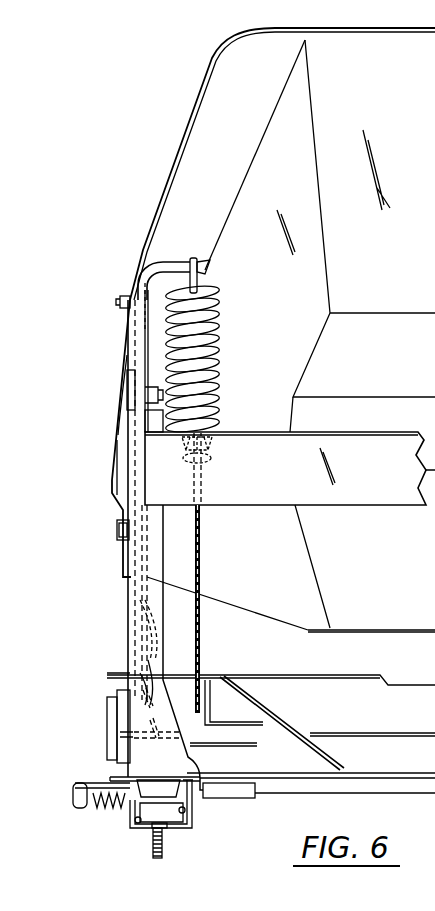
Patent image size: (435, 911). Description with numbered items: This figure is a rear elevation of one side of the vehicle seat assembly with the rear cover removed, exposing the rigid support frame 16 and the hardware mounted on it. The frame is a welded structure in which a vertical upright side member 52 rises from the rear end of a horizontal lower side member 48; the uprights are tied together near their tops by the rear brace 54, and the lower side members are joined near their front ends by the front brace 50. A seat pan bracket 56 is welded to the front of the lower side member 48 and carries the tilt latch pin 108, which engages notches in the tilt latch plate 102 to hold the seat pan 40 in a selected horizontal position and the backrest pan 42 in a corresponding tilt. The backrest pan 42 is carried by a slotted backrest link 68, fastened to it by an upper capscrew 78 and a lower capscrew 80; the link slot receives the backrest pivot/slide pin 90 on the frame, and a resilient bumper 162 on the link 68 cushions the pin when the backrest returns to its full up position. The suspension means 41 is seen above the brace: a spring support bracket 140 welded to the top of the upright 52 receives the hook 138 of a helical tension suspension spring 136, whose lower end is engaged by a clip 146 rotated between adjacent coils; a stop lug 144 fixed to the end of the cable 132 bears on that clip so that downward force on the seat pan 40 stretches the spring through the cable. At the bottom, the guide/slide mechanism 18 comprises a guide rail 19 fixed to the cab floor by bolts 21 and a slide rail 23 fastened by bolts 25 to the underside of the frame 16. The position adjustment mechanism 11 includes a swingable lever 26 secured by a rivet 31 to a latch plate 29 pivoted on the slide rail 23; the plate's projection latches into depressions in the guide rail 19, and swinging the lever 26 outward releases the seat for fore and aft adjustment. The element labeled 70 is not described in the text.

The position adjustment mechanism 11 is at (58, 790).
The support frame 16 is at (112, 765).
The guide/slide mechanism 18 is at (142, 831).
The guide rail 19 is at (192, 822).
The bolt 21 is at (165, 855).
The slide rail 23 is at (132, 817).
The bolt 25 is at (172, 832).
The swingable lever 26 is at (75, 805).
The latch plate 29 is at (100, 780).
The rivet 31 is at (85, 780).
The seat pan 40 is at (327, 675).
The suspension means 41 is at (216, 292).
The backrest pan 42 is at (192, 116).
The lower side member 48 is at (250, 798).
The front brace 50 is at (343, 795).
The upright side member 52 is at (128, 479).
The rear brace 54 is at (353, 495).
The seat pan bracket 56 is at (108, 730).
The backrest link 68 is at (150, 638).
The slot 70 is at (140, 673).
The upper capscrew 78 is at (118, 302).
The lower capscrew 80 is at (117, 528).
The backrest pivot/slide pin 90 is at (126, 385).
The tilt latch plate 102 is at (115, 690).
The tilt latch pin 108 is at (108, 705).
The cable 132 is at (200, 568).
The suspension spring 136 is at (215, 325).
The hook 138 is at (190, 262).
The spring support bracket 140 is at (155, 265).
The stop lug 144 is at (206, 441).
The clip 146 is at (212, 460).
The resilient bumper 162 is at (121, 368).